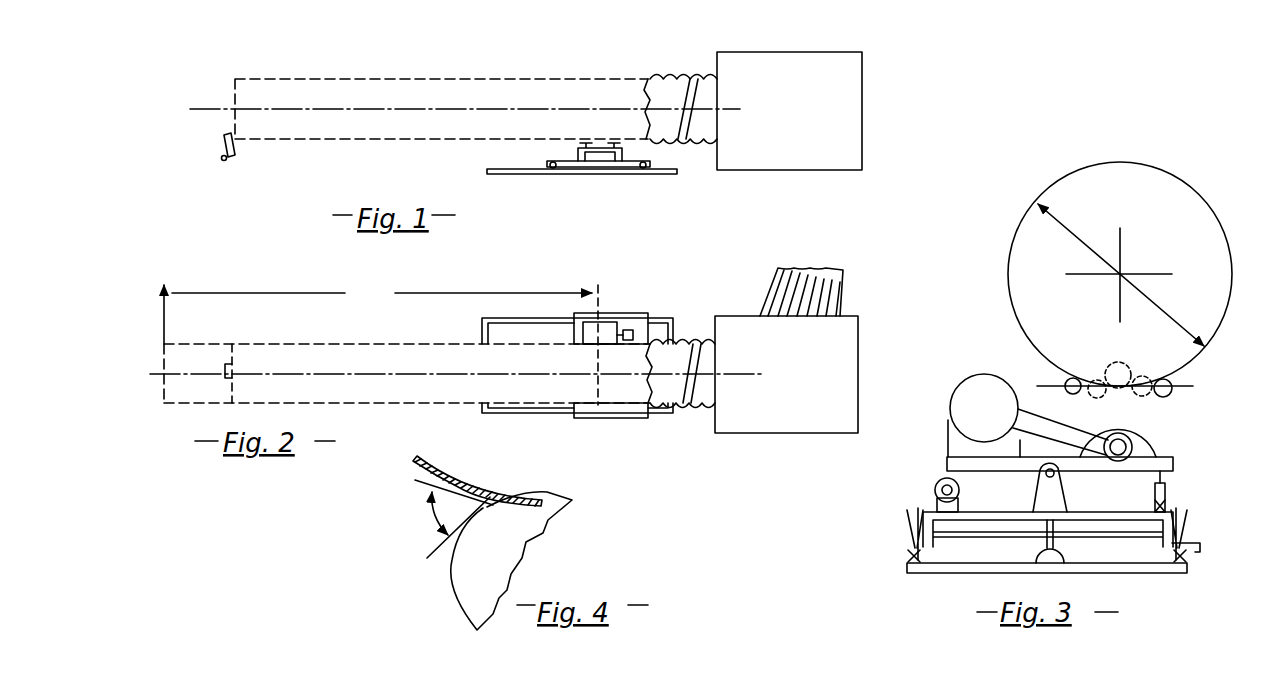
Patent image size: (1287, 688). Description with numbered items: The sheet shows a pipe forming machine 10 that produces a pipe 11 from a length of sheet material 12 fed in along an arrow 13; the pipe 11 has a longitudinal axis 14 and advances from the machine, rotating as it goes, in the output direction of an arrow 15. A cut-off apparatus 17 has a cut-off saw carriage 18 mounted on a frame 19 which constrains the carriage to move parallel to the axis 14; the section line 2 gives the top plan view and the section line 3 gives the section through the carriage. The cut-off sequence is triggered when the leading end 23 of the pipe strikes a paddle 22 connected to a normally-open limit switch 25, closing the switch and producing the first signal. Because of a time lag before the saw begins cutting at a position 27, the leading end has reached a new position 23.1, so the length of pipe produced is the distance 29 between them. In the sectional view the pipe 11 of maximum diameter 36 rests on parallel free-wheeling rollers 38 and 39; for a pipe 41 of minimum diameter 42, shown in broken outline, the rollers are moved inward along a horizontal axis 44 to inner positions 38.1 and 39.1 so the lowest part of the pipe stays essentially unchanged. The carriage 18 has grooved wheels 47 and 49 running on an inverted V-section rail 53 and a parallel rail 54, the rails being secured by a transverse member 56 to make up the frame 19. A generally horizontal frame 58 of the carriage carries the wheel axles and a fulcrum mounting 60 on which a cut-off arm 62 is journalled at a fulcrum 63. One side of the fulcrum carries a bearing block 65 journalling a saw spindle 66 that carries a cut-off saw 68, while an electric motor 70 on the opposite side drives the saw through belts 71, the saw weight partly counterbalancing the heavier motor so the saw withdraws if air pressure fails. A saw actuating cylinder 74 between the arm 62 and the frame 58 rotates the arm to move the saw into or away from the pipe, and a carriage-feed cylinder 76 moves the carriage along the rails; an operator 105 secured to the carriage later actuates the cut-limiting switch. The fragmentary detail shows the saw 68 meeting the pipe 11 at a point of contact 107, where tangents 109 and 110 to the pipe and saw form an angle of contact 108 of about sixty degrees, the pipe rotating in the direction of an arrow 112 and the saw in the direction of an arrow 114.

In FIG. 1, the section line 2— 2 is at (228, 56).
In FIG. 1, the section line 3— 3 is at (572, 57).
In FIG. 1, the pipe forming machine 10 is at (758, 160).
In FIG. 2, the pipe forming machine 10 is at (786, 423).
In FIG. 1, the pipe 11 is at (680, 90).
In FIG. 2, the pipe 11 is at (682, 342).
In FIG. 3, the pipe 11 is at (1045, 198).
In FIG. 4, the pipe 11 is at (422, 458).
In FIG. 2, the sheet material 12 is at (822, 302).
In FIG. 2, the arrow 13 is at (823, 270).
In FIG. 1, the longitudinal axis 14 is at (226, 109).
In FIG. 2, the longitudinal axis 14 is at (168, 372).
In FIG. 1, the arrow 15 is at (340, 62).
In FIG. 3, the arrow 15 is at (1200, 512).
In FIG. 1, the cut-off apparatus 17 is at (599, 180).
In FIG. 2, the cut-off apparatus 17 is at (615, 422).
In FIG. 3, the cut-off apparatus 17 is at (902, 574).
In FIG. 1, the cut-off saw carriage 18 is at (578, 152).
In FIG. 2, the cut-off saw carriage 18 is at (642, 322).
In FIG. 3, the cut-off saw carriage 18 is at (944, 466).
In FIG. 1, the frame 19 is at (668, 170).
In FIG. 2, the frame 19 is at (500, 318).
In FIG. 3, the frame 19 is at (1164, 574).
In FIG. 1, the paddle 22 is at (225, 144).
In FIG. 2, the paddle 22 is at (226, 378).
In FIG. 1, the leading end 23 is at (234, 88).
In FIG. 2, the leading end 23 is at (226, 350).
In FIG. 2, the new position 23.1 is at (170, 363).
In FIG. 1, the normally-open limit switch 25 is at (222, 162).
In FIG. 2, the position 27 is at (588, 380).
In FIG. 2, the distance 29 is at (381, 344).
In FIG. 3, the maximum diameter 36 is at (1084, 257).
In FIG. 3, the roller 38 is at (1180, 393).
In FIG. 3, the inner position 38.1 is at (1152, 394).
In FIG. 3, the roller 39 is at (1066, 382).
In FIG. 3, the inner position 39.1 is at (1100, 391).
In FIG. 3, the pipe 41 is at (1132, 358).
In FIG. 3, the minimum diameter 42 is at (1108, 366).
In FIG. 3, the horizontal axis 44 is at (1188, 385).
In FIG. 3, the grooved wheel 47 is at (906, 524).
In FIG. 3, the grooved wheel 49 is at (1188, 526).
In FIG. 3, the inverted V-section rail 53 is at (900, 554).
In FIG. 3, the rail 54 is at (1192, 560).
In FIG. 3, the transverse member 56 is at (927, 573).
In FIG. 3, the horizontal frame 58 is at (1000, 500).
In FIG. 3, the fulcrum mounting 60 is at (1058, 503).
In FIG. 3, the cut-off arm 62 is at (1176, 462).
In FIG. 3, the fulcrum 63 is at (1046, 474).
In FIG. 3, the bearing block 65 is at (1126, 436).
In FIG. 3, the saw spindle 66 is at (1130, 447).
In FIG. 3, the cut-off saw 68 is at (1245, 457).
In FIG. 4, the cut-off saw 68 is at (474, 580).
In FIG. 3, the electric motor 70 is at (972, 382).
In FIG. 3, the belts 71 is at (1048, 406).
In FIG. 3, the saw actuating cylinder 74 is at (1167, 490).
In FIG. 3, the carriage-feed cylinder 76 is at (1038, 558).
In FIG. 3, the operator 105 is at (1203, 545).
In FIG. 4, the point of contact 107 is at (496, 499).
In FIG. 4, the angle of contact 108 is at (429, 514).
In FIG. 4, the tangent 109 is at (418, 480).
In FIG. 4, the tangent 110 is at (430, 559).
In FIG. 4, the arrow 112 is at (448, 463).
In FIG. 4, the arrow 114 is at (478, 528).